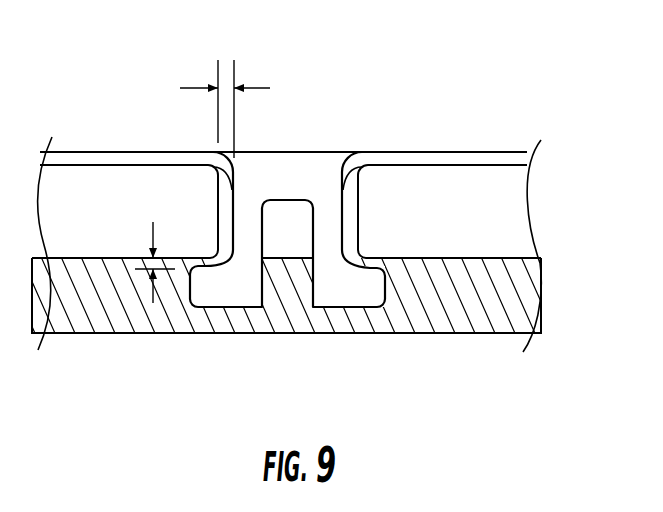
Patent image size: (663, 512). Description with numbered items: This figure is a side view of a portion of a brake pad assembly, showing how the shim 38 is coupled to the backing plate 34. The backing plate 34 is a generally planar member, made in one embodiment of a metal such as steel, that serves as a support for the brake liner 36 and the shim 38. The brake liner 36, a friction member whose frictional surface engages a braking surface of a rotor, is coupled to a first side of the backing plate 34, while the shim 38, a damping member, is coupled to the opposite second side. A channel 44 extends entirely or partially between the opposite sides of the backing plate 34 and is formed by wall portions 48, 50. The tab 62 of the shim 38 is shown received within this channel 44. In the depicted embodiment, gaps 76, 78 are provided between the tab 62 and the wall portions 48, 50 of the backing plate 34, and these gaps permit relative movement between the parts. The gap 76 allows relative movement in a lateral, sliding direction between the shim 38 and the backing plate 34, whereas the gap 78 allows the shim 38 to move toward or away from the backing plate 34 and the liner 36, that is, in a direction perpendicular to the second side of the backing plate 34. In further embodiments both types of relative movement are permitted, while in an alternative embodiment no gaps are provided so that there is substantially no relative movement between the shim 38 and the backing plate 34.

The backing plate 34 is at (510, 232).
The brake liner 36 is at (497, 313).
The shim 38 is at (460, 162).
The channel 44 is at (287, 280).
The wall portion 48 is at (200, 200).
The wall portion 50 is at (382, 208).
The tab 62 is at (315, 192).
The gap 76 is at (225, 58).
The gap 78 is at (135, 269).